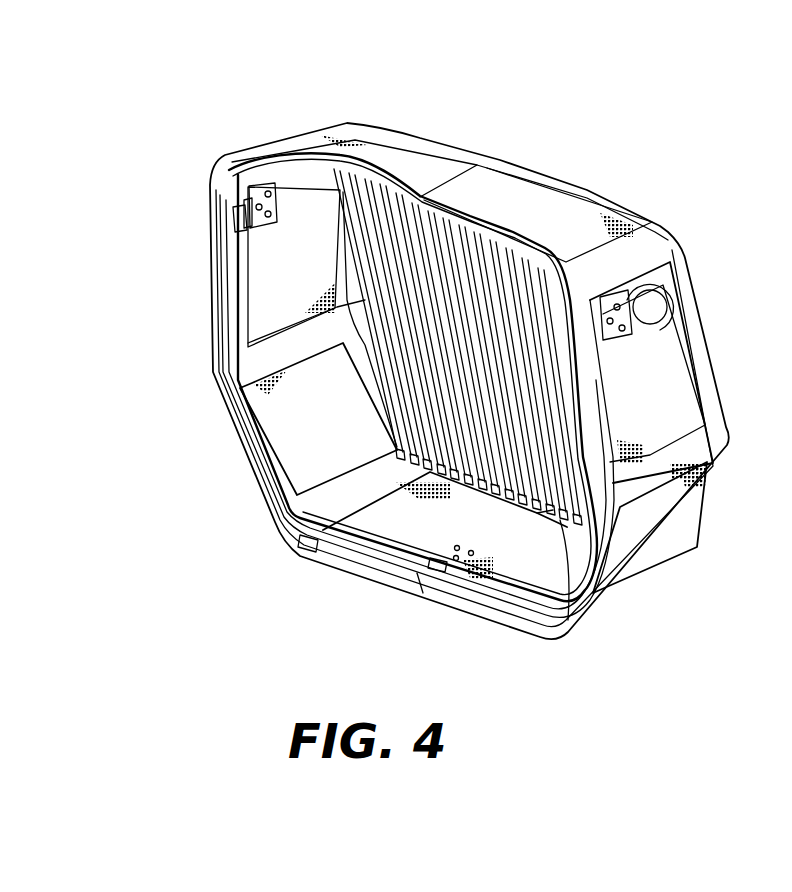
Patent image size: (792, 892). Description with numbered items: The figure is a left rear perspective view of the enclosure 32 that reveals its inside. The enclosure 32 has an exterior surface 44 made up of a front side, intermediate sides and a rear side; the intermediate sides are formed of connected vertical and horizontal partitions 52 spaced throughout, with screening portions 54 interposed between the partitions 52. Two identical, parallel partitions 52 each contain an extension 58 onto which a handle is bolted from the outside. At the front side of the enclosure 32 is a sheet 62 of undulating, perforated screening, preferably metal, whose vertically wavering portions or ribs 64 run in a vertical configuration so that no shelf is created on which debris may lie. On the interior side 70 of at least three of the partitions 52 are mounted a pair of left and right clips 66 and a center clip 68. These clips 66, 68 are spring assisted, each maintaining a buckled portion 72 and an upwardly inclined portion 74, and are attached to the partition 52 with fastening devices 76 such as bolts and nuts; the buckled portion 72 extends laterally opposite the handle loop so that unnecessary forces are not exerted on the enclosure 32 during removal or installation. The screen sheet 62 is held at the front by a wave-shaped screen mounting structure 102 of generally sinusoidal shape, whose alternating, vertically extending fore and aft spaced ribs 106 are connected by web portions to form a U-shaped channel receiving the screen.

The enclosure 32 is at (606, 116).
The exterior surface 44 is at (727, 312).
The partitions 52 is at (280, 540).
The screening portions 54 is at (647, 547).
The extension 58 is at (247, 180).
The sheet of undulating screening 62 is at (350, 360).
The ribs 64 is at (317, 557).
The left and right clips 66 is at (258, 180).
The center clip 68 is at (447, 567).
The interior side 70 is at (235, 333).
The buckled portion 72 is at (243, 203).
The upwardly inclined portion 74 is at (233, 215).
The fastening devices 76 is at (273, 217).
The wave-shaped screen mounting structure 102 is at (539, 522).
The ribs 106 is at (573, 624).